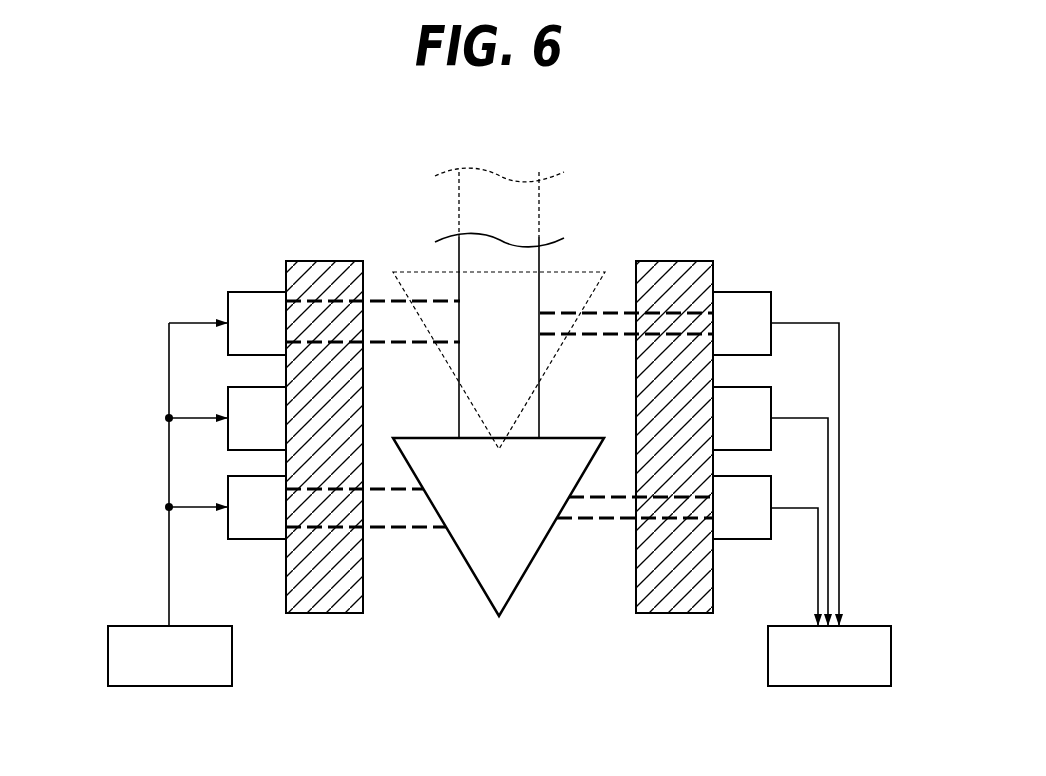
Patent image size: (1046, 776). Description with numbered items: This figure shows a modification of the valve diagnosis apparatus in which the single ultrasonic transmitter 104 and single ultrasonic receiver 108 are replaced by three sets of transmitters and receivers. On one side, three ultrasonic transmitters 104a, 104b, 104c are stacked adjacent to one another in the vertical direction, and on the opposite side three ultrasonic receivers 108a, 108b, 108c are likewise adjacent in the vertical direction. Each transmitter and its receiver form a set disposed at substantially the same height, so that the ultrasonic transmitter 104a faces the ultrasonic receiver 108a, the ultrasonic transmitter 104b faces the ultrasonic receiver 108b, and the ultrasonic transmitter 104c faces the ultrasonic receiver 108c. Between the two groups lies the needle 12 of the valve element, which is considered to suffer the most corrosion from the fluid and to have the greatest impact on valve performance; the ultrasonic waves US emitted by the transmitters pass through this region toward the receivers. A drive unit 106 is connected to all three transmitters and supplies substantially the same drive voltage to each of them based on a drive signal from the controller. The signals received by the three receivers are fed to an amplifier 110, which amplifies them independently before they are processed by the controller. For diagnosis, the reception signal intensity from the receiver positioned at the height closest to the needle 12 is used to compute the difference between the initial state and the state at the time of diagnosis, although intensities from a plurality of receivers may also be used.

The needle 12 is at (487, 520).
The ultrasonic wave US is at (387, 299).
The ultrasonic transmitter 104 is at (102, 293).
The ultrasonic transmitter 104a is at (237, 306).
The ultrasonic transmitter 104b is at (237, 403).
The ultrasonic transmitter 104c is at (238, 491).
The drive unit 106 is at (150, 667).
The ultrasonic receiver 108 is at (898, 293).
The ultrasonic receiver 108a is at (761, 305).
The ultrasonic receiver 108b is at (761, 403).
The ultrasonic receiver 108c is at (761, 490).
The amplifier 110 is at (810, 669).